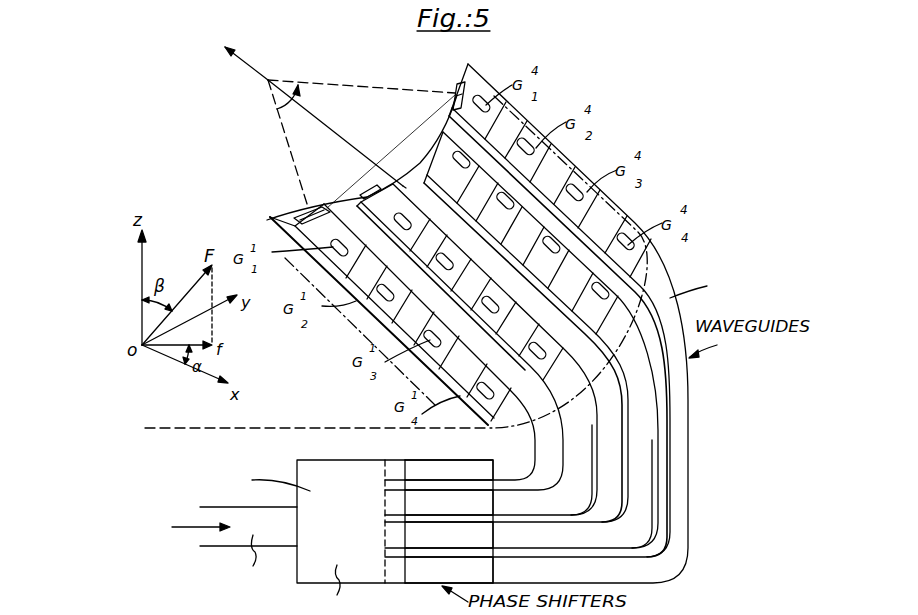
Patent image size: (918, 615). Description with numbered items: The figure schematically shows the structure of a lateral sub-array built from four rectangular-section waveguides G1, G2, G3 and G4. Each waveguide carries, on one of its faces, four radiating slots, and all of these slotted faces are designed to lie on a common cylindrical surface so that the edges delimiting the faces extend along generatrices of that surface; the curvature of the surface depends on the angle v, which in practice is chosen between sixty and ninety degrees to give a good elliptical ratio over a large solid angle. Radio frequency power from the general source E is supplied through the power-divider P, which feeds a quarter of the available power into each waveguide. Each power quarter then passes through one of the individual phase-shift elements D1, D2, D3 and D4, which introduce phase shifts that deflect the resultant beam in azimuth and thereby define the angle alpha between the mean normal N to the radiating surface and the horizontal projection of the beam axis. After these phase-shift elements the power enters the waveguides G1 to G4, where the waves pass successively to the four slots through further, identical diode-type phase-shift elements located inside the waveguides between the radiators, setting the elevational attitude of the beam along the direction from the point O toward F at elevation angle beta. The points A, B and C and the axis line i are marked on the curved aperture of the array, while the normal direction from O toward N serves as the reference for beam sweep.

The waveguide G1 is at (513, 450).
The waveguide G2 is at (585, 455).
The waveguide G3 is at (642, 500).
The waveguide G4 is at (672, 545).
The phase-shift element D1 is at (449, 471).
The phase-shift element D2 is at (449, 503).
The phase-shift element D3 is at (449, 536).
The phase-shift element D4 is at (449, 571).
The power-divider P is at (335, 534).
The general source E is at (234, 547).
The mean normal N is at (333, 127).
The point A is at (312, 205).
The point B is at (451, 88).
The point C is at (370, 186).
The origin point O is at (413, 189).
The axis line i is at (363, 341).